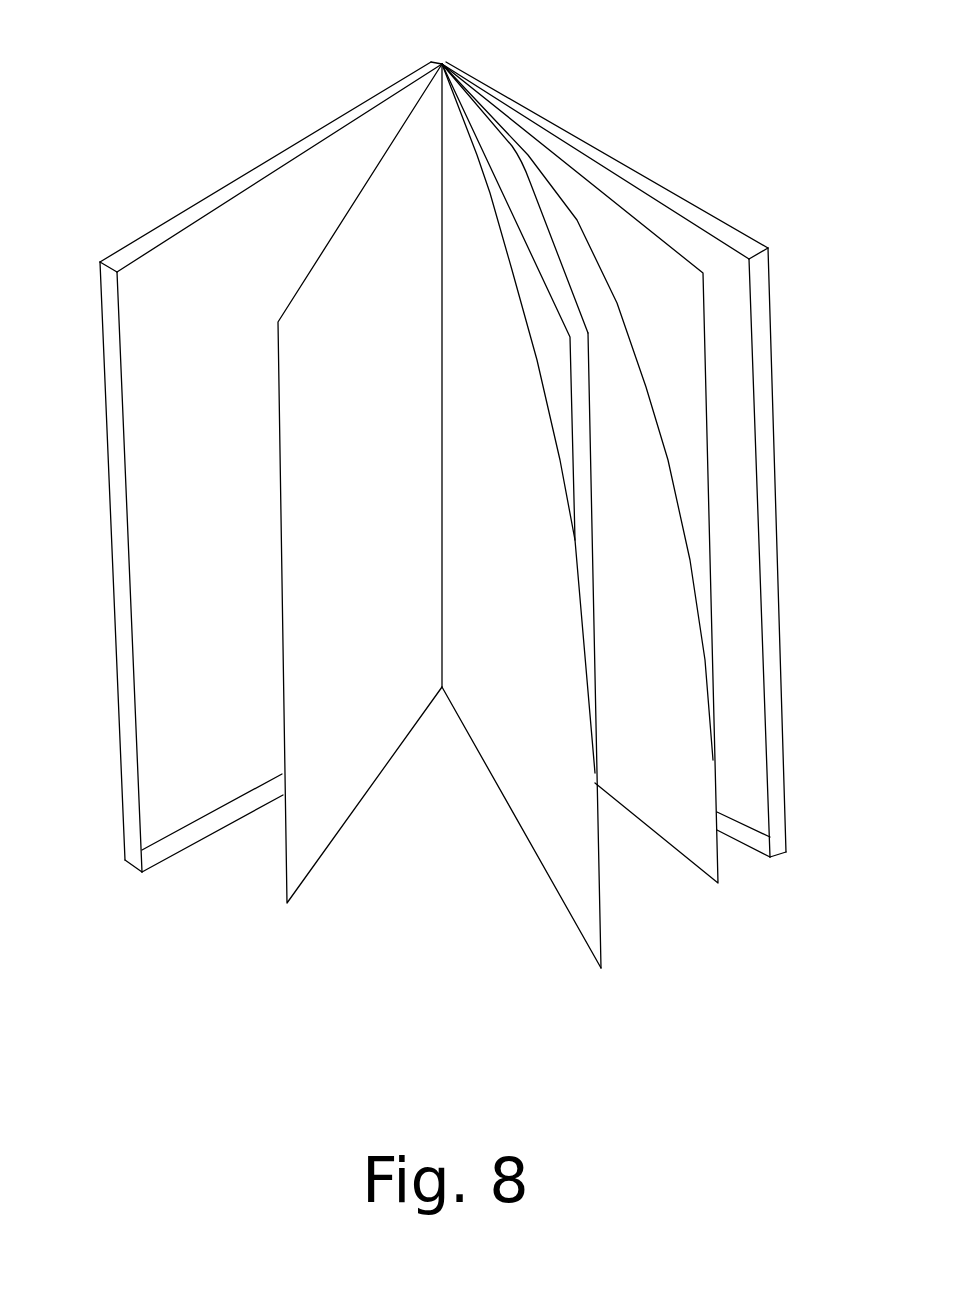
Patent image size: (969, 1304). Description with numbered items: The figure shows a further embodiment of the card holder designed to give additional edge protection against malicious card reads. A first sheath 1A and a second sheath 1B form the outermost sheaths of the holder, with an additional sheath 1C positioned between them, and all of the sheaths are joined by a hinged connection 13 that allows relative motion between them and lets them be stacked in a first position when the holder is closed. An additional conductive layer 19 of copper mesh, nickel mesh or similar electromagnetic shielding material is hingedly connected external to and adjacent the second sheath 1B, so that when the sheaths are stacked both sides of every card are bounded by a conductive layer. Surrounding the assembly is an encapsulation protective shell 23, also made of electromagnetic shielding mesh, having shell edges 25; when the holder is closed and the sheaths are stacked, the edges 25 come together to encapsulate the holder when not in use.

The first sheath 1A is at (662, 812).
The second sheath 1B is at (369, 757).
The additional sheath 1C is at (528, 776).
The hinged connection 13 is at (442, 64).
The additional conductive layer 19 is at (745, 767).
The encapsulation protective shell 23 is at (170, 368).
The shell edges 25 is at (148, 242).